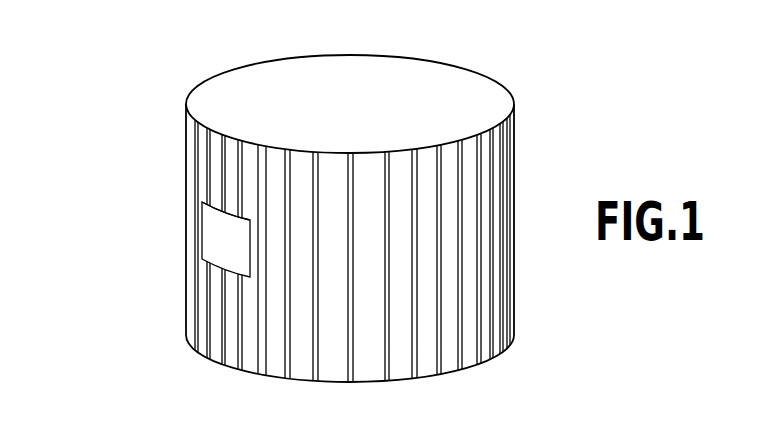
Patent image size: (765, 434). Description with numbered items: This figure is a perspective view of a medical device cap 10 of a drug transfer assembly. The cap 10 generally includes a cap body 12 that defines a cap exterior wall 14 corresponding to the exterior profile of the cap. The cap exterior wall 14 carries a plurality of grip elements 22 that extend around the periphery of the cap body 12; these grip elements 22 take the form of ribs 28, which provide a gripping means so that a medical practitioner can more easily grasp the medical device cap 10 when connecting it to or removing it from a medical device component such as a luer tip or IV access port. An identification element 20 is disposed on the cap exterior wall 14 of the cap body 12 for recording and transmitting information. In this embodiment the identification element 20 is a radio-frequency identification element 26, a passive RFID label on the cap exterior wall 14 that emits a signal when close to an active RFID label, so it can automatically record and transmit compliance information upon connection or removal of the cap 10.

The medical device cap 10 is at (108, 119).
The cap body 12 is at (515, 290).
The cap exterior wall 14 is at (515, 133).
The identification element 20 is at (220, 245).
The grip elements 22 is at (353, 185).
The RFID element 26 is at (218, 228).
The ribs 28 is at (312, 330).